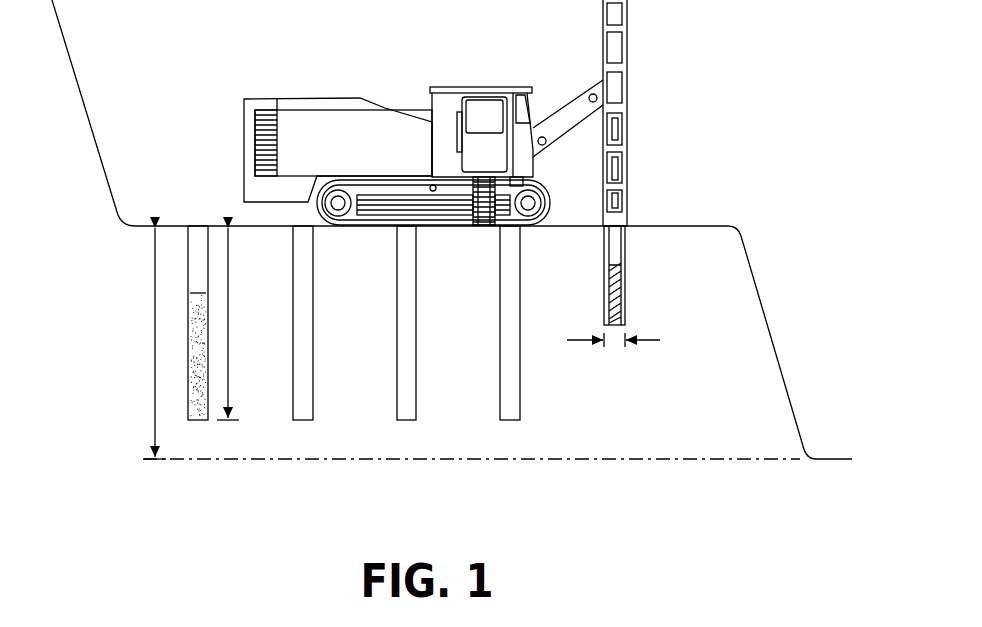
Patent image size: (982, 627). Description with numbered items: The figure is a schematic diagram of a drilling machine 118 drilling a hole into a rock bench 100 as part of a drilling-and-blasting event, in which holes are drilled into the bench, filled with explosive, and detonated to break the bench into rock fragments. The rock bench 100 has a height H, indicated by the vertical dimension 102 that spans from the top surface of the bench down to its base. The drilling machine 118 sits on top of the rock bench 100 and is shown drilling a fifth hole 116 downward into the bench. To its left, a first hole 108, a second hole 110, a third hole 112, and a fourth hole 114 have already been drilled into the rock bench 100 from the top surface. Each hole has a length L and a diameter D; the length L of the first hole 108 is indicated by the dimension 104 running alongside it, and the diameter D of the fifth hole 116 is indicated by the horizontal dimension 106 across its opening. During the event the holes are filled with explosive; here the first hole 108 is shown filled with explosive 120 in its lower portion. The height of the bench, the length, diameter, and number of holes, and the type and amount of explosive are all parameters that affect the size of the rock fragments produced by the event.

The rock bench 100 is at (763, 310).
The height H of the rock bench 102 is at (152, 348).
The length L of the first hole 104 is at (230, 381).
The diameter D of the fifth hole 106 is at (613, 345).
The first hole 108 is at (201, 421).
The second hole 110 is at (300, 421).
The third hole 112 is at (408, 421).
The fourth hole 114 is at (507, 421).
The fifth hole 116 is at (624, 303).
The drilling machine 118 is at (412, 118).
The explosive 120 is at (197, 331).